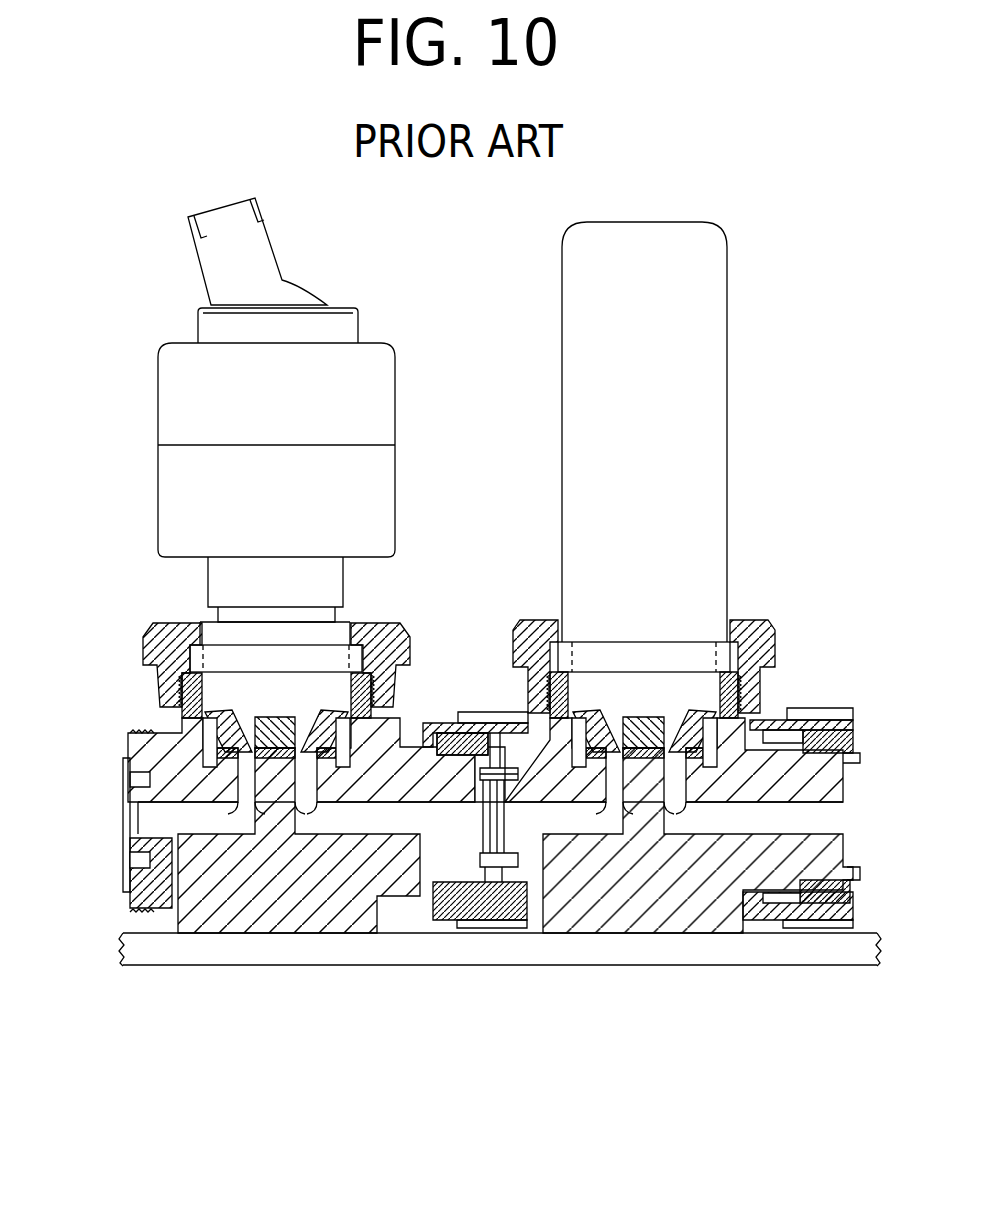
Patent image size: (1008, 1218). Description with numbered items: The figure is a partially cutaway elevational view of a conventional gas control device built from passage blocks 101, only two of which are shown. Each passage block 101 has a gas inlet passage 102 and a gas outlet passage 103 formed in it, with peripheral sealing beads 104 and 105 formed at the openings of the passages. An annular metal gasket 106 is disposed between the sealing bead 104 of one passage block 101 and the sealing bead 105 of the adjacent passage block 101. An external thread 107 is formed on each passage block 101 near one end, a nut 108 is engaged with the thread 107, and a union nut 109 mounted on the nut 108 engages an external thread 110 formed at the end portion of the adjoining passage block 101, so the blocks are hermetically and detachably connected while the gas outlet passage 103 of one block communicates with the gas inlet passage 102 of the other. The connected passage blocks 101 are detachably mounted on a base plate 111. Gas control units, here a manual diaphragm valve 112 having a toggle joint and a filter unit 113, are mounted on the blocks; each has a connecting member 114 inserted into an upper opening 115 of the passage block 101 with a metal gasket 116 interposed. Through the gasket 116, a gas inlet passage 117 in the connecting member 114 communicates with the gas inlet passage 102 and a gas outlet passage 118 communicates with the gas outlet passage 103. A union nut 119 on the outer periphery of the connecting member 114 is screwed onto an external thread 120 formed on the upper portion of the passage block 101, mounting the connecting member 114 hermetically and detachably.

The passage block 101 is at (270, 940).
The gas inlet passage 102 is at (222, 830).
The gas outlet passage 103 is at (330, 840).
The peripheral sealing bead 104 is at (123, 847).
The peripheral sealing bead 105 is at (853, 842).
The annular metal gasket 106 is at (432, 905).
The external thread 107 is at (447, 719).
The nut 108 is at (487, 714).
The union nut 109 is at (427, 722).
The external thread 110 is at (513, 705).
The base plate 111 is at (152, 967).
The manual diaphragm valve 112 is at (409, 326).
The filter unit 113 is at (748, 290).
The connecting member 114 is at (460, 673).
The upper opening 115 is at (572, 687).
The metal gasket 116 is at (208, 760).
The gas inlet passage 117 is at (205, 716).
The gas outlet passage 118 is at (328, 695).
The union nut 119 is at (147, 647).
The external thread 120 is at (748, 625).